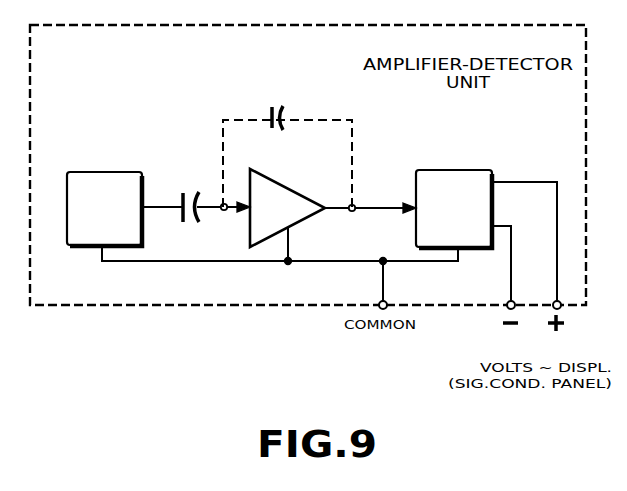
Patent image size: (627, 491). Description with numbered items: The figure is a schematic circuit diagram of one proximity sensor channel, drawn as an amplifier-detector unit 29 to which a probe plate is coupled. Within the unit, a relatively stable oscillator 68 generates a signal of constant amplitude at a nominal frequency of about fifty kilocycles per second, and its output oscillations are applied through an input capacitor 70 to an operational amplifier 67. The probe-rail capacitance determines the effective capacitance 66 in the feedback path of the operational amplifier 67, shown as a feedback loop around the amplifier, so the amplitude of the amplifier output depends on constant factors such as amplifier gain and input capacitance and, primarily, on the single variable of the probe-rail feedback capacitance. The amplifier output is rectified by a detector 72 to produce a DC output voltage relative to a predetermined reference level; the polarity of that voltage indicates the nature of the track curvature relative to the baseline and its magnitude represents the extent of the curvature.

The amplifier-detector unit 29 is at (166, 77).
The effective capacitance 66 is at (269, 113).
The operational amplifier 67 is at (289, 190).
The oscillator 68 is at (110, 172).
The input capacitor 70 is at (181, 193).
The detector 72 is at (447, 170).